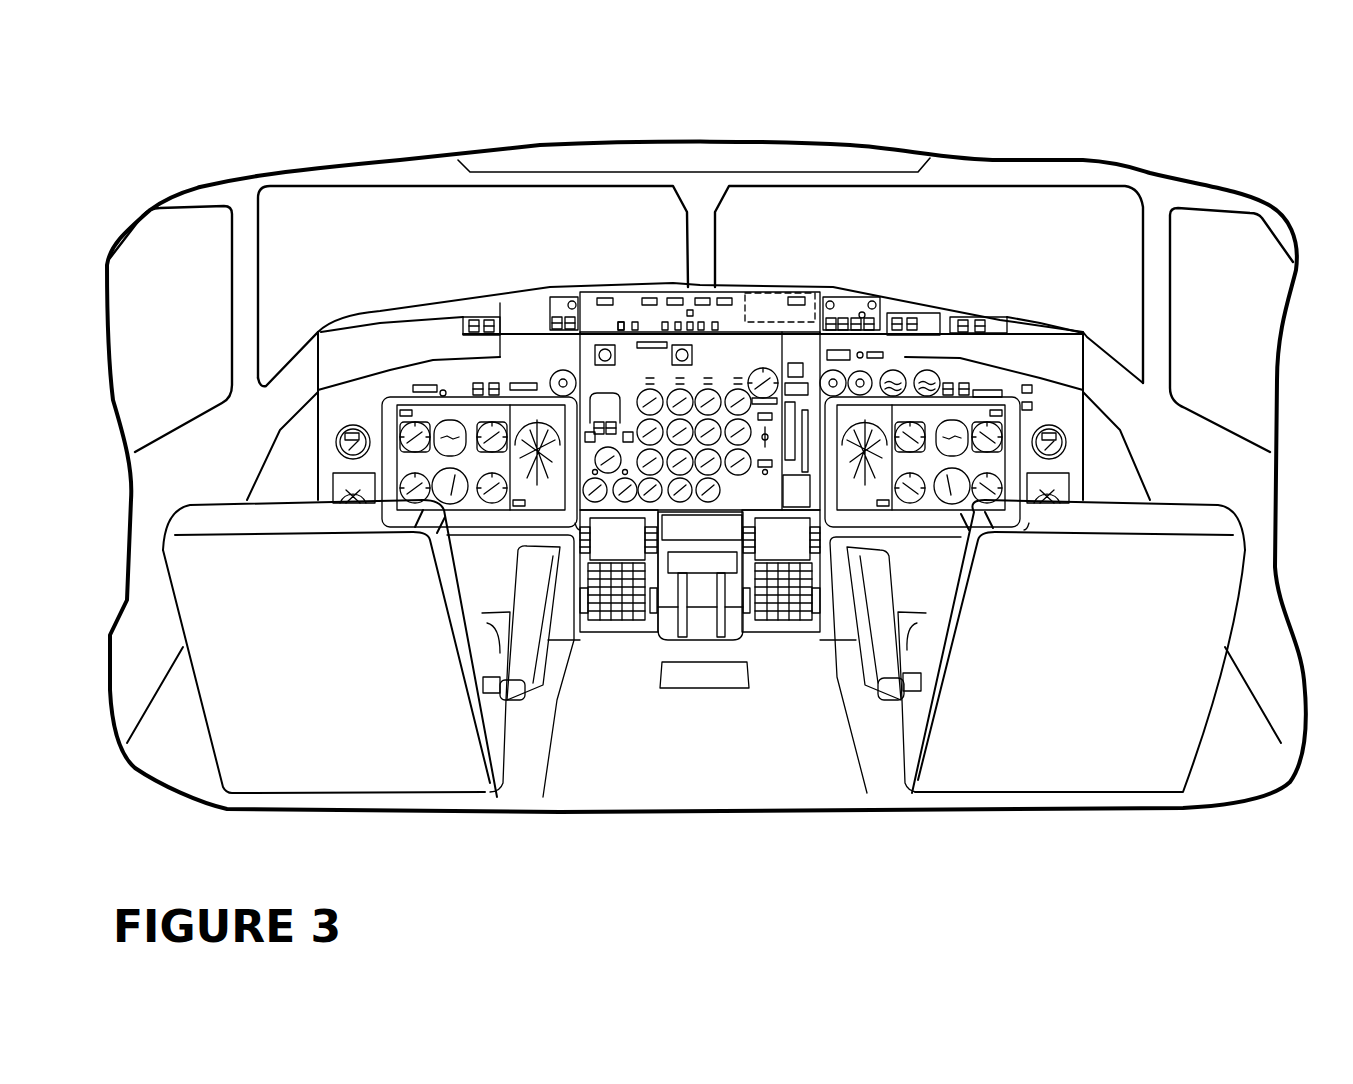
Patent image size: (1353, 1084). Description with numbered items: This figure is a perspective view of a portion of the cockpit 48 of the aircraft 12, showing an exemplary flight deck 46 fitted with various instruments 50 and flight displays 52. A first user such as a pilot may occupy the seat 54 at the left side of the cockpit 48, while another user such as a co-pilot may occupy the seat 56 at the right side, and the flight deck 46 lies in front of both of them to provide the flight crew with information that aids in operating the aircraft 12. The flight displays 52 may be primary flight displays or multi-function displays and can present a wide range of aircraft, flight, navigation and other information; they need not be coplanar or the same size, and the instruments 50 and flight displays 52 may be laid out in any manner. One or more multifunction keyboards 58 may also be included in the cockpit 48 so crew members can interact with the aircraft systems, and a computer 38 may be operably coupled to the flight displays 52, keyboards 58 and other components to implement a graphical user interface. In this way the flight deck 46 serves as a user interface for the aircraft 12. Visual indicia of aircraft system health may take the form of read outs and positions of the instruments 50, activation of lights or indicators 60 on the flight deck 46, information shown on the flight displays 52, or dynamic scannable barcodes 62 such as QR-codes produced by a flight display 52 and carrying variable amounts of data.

The aircraft 12 is at (292, 96).
The computer 38 is at (797, 293).
The flight deck 46 is at (1043, 377).
The cockpit 48 is at (406, 160).
The instruments 50 is at (762, 373).
The flight displays 52 is at (543, 397).
The seat 54 is at (243, 690).
The seat 56 is at (1180, 750).
The multifunction keyboards 58 is at (617, 618).
The lights or indicators 60 is at (622, 325).
The scannable barcodes 62 is at (1007, 420).